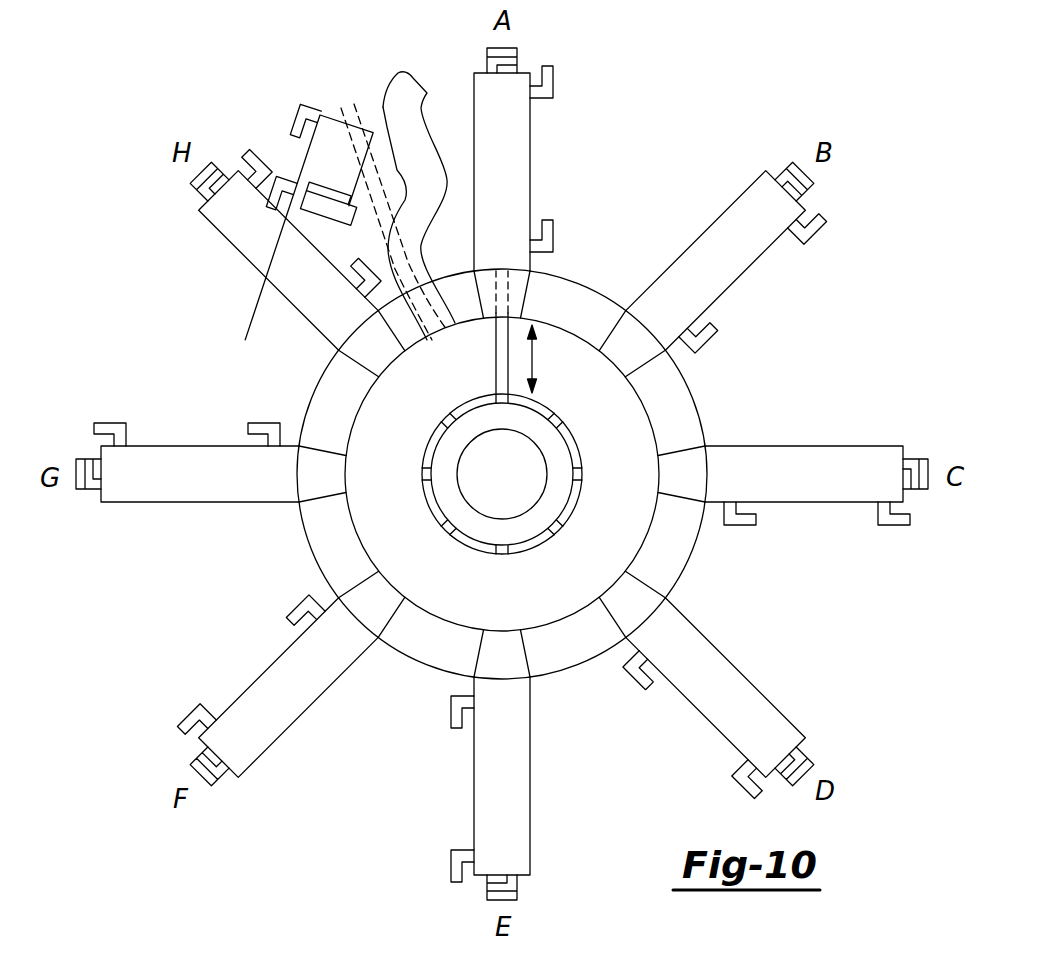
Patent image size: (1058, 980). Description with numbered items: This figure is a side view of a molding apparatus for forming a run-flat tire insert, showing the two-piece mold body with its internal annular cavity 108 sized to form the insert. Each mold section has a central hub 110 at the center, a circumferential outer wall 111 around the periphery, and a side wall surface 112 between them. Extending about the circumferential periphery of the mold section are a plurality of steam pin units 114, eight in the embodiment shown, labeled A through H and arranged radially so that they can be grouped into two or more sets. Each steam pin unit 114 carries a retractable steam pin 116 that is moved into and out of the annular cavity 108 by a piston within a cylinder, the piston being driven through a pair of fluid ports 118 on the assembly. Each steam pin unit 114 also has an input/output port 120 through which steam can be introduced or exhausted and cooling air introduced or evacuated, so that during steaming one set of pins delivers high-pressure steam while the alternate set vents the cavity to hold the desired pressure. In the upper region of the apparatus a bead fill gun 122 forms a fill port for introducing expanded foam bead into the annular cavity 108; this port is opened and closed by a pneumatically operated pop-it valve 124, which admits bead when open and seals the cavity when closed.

The annular cavity 108 is at (626, 438).
The central hub 110 is at (582, 496).
The circumferential outer wall 111 is at (553, 335).
The side wall surface 112 is at (452, 597).
The steam pin unit 114 is at (530, 156).
The steam pin 116 is at (494, 367).
The fluid port 118 is at (552, 86).
The input/output port 120 is at (487, 62).
The bead fill gun 122 is at (349, 58).
The pop-it valve 124 is at (392, 243).